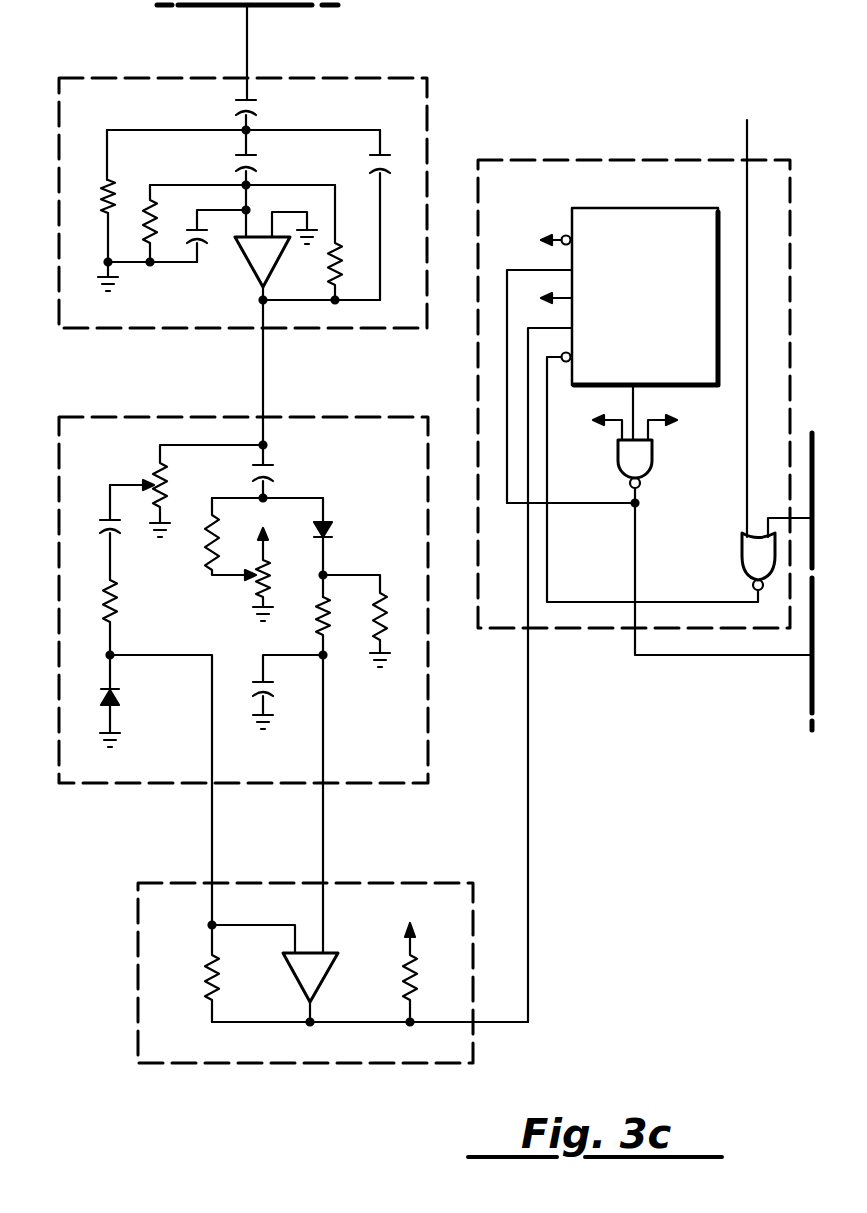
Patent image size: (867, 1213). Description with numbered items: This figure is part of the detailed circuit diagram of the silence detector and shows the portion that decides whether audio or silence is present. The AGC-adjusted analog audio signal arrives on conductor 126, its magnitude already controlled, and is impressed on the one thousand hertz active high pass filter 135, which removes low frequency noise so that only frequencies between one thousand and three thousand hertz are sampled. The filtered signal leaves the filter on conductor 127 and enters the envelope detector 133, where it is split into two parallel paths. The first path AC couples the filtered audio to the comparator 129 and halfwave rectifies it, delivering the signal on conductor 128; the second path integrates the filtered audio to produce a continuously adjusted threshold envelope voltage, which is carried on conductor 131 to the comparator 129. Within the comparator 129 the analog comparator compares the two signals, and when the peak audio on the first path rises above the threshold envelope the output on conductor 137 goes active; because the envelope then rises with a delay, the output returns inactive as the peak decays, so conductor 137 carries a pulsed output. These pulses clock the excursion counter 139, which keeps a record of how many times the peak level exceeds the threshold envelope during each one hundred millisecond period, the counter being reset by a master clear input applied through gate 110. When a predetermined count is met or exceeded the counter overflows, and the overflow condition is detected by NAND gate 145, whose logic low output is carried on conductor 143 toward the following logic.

The conductor 126 is at (247, 41).
The amplifier output line 127 is at (263, 371).
The reference line 128 is at (212, 838).
The comparator 129 is at (193, 1063).
The conductor 131 is at (323, 838).
The envelope detector 133 is at (120, 417).
The active high pass filter 135 is at (130, 78).
The conductor 137 is at (528, 838).
The excursion counter 139 is at (645, 349).
The output line 143 is at (700, 655).
The NAND gate 145 is at (652, 470).
The NOR gate 110 is at (742, 550).